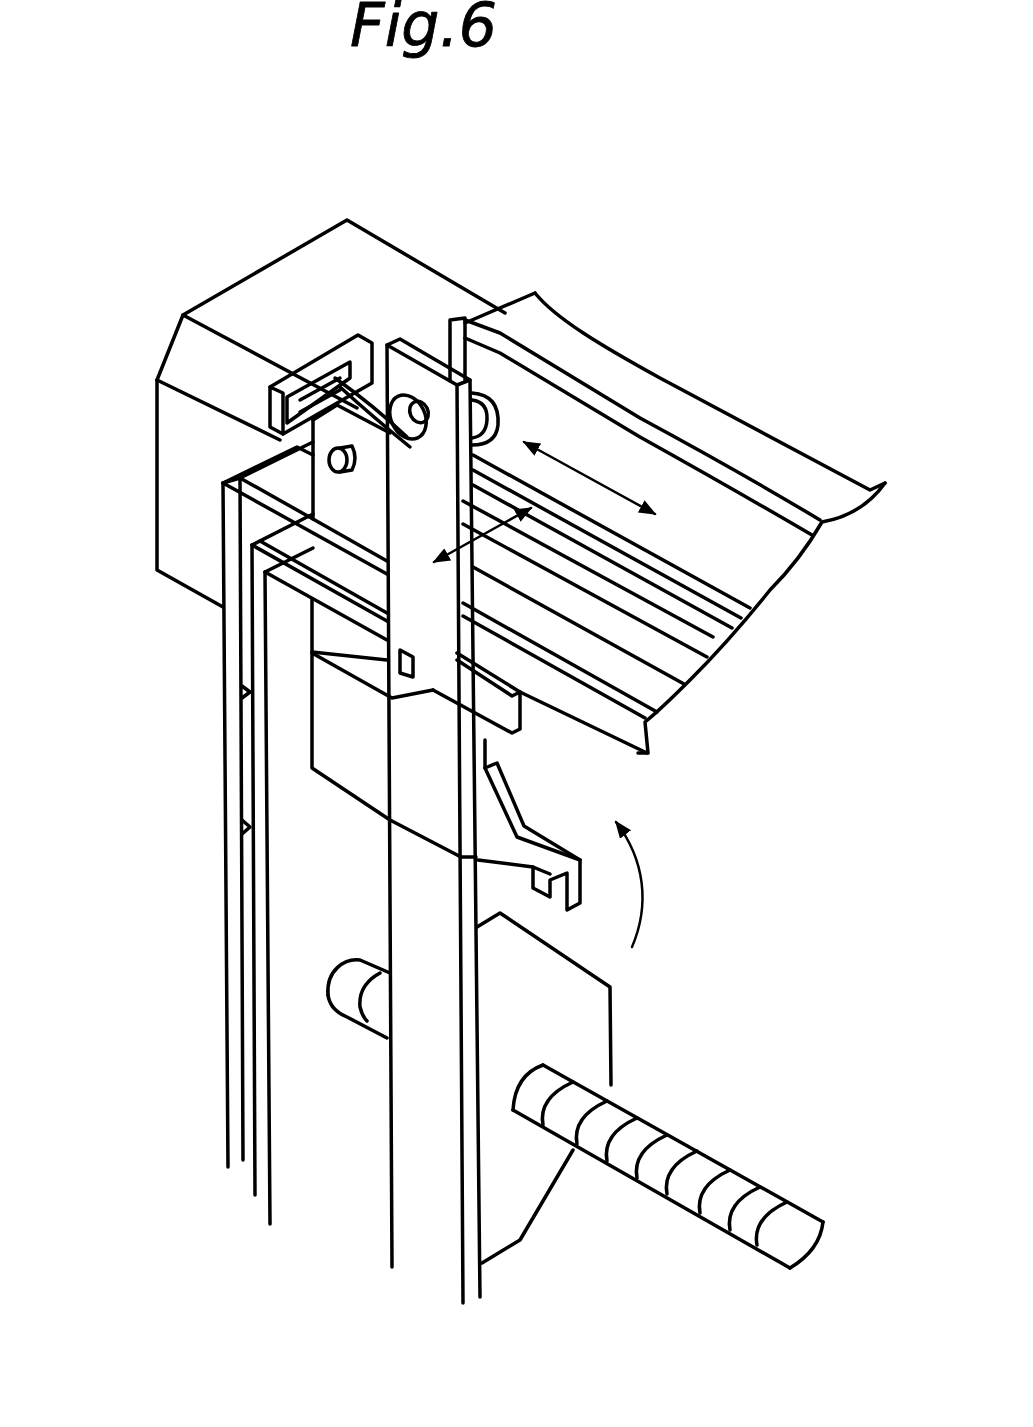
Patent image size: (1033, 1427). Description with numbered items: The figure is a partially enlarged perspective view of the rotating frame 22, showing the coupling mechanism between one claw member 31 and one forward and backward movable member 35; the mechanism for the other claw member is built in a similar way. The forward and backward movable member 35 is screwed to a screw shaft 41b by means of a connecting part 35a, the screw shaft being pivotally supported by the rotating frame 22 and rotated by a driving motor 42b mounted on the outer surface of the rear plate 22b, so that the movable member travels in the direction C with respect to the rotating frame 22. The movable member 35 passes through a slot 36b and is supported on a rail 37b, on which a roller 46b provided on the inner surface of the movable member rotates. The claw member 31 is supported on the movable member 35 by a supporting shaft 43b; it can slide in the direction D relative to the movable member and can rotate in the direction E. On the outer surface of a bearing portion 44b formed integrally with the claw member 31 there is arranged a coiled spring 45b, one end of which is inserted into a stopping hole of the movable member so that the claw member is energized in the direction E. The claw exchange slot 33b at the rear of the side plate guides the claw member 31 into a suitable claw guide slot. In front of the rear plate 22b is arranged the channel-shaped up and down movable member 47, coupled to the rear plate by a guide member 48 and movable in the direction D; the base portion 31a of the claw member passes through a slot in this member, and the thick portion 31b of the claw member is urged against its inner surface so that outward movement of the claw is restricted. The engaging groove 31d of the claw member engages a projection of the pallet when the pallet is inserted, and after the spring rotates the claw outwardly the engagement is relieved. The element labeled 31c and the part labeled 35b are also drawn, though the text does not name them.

The rotating frame 22 is at (220, 689).
The rear plate 22b is at (230, 1001).
The claw member 31 is at (300, 493).
The base portion 31a is at (340, 500).
The thick portion 31b is at (343, 752).
The holding member tab 31c is at (310, 652).
The engaging groove 31d is at (551, 898).
The claw exchange slot 33b is at (615, 660).
The forward and backward movable member 35 is at (423, 365).
The connecting part 35a is at (578, 1067).
The lever 35b is at (303, 392).
The slot 36b is at (620, 575).
The rail 37b is at (617, 413).
The screw shaft 41b is at (753, 1210).
The driving motor 42b is at (260, 318).
The supporting shaft 43b is at (328, 456).
The bearing portion 44b is at (400, 395).
The coiled spring 45b is at (357, 338).
The roller 46b is at (503, 407).
The up and down movable member 47 is at (257, 920).
The guide member 48 is at (247, 762).
The direction C is at (589, 474).
The direction D is at (482, 540).
The direction E is at (648, 884).